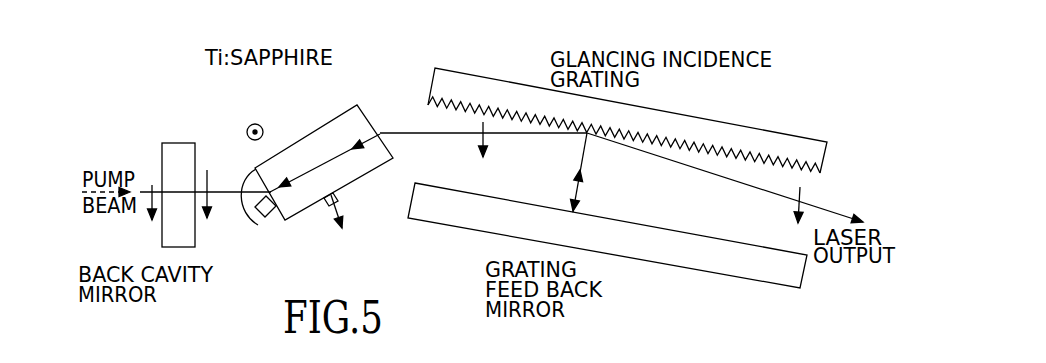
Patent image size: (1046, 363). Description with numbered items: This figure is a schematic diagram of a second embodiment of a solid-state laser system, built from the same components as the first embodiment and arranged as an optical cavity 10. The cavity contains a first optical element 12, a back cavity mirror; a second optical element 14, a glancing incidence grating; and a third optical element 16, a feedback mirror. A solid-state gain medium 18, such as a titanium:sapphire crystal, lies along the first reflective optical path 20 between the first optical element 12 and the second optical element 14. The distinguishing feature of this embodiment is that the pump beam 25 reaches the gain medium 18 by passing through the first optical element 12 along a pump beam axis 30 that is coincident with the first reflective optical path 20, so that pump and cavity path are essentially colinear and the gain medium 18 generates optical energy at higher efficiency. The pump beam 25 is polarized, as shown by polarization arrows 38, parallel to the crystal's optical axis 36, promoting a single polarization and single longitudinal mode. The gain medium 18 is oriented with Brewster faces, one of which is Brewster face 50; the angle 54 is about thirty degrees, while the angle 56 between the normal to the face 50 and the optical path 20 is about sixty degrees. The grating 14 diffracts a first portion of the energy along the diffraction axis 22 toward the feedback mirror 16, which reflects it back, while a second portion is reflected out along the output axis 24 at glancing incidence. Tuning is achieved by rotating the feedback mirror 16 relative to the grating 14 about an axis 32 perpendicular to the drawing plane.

The optical cavity 10 is at (812, 100).
The first optical element 12 is at (162, 155).
The second optical element 14 is at (468, 75).
The third optical element 16 is at (720, 275).
The solid-state gain medium 18 is at (360, 105).
The first reflective optical path 20 is at (222, 197).
The diffraction axis 22 is at (582, 188).
The output axis 24 is at (725, 178).
The pump beam 25 is at (132, 190).
The pump beam axis 30 is at (82, 192).
The axis 32 is at (256, 122).
The optical axis 36 is at (348, 223).
The polarization arrows 38 is at (152, 185).
The Brewster face 50 is at (373, 112).
The angle 54 is at (251, 172).
The angle 56 is at (271, 193).